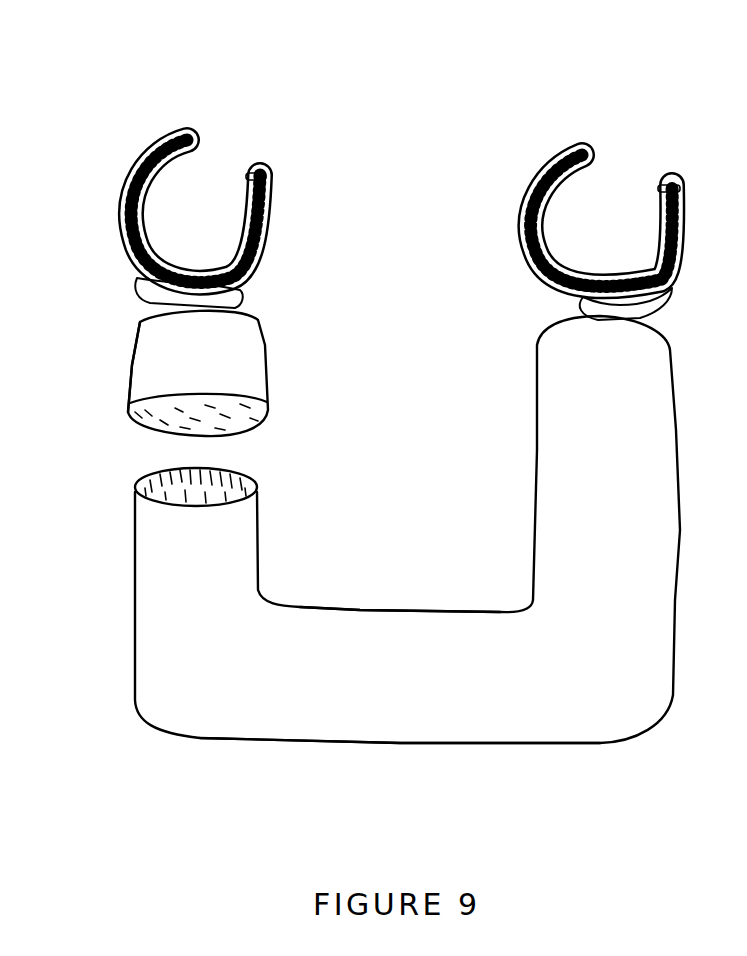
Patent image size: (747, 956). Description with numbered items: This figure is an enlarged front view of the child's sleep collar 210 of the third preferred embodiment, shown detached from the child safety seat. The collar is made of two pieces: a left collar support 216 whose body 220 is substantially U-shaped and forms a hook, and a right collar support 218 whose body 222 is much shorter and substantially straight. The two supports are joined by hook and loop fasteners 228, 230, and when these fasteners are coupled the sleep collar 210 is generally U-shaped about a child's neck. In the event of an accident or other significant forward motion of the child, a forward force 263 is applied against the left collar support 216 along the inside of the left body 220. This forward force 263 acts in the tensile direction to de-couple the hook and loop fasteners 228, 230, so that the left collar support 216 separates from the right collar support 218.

The child's sleep collar 210 is at (381, 211).
The left collar support 216 is at (552, 707).
The right collar support 218 is at (157, 350).
The body of the left collar support 220 is at (381, 705).
The body of the right collar support 222 is at (160, 378).
The hook and loop fastener 228 is at (147, 480).
The hook and loop fastener 230 is at (150, 419).
The forward force 263 is at (377, 611).